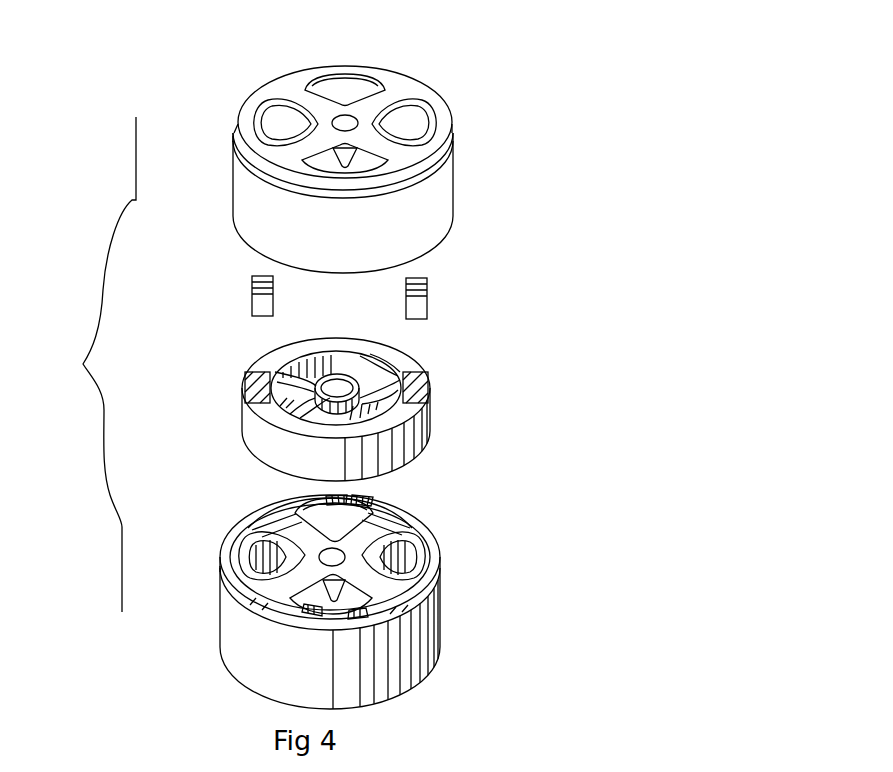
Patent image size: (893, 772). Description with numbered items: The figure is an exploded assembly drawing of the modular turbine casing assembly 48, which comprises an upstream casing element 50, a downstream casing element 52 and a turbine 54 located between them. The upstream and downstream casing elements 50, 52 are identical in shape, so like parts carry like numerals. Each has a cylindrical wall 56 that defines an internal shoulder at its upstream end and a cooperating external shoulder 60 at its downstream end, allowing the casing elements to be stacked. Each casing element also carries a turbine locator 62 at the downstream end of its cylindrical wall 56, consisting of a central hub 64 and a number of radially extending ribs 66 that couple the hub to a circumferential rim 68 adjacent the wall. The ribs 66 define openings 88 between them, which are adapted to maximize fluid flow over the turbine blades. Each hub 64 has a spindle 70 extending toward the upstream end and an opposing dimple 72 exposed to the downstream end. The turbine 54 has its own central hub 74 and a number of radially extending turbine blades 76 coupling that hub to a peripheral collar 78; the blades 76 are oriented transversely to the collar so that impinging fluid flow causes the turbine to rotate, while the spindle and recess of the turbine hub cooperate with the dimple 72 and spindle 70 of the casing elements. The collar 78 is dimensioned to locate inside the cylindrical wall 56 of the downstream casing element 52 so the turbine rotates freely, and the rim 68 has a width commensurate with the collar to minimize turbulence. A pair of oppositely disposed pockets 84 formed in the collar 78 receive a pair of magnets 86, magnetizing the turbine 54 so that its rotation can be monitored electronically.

The modular turbine casing assembly 48 is at (82, 364).
The upstream casing element 50 is at (445, 612).
The downstream casing element 52 is at (453, 173).
The turbine 54 is at (423, 455).
The cylindrical wall 56 is at (238, 198).
The external shoulder 60 is at (236, 130).
The turbine locator 62 is at (413, 88).
The central hub 64 is at (350, 110).
The radially extending ribs 66 is at (262, 100).
The circumferential rim 68 is at (447, 124).
The spindle 70 is at (337, 167).
The dimple 72 is at (392, 173).
The central hub 74 is at (335, 380).
The turbine blades 76 is at (397, 378).
The peripheral collar 78 is at (273, 356).
The pockets 84 is at (250, 388).
The magnets 86 is at (252, 300).
The openings 88 is at (345, 123).